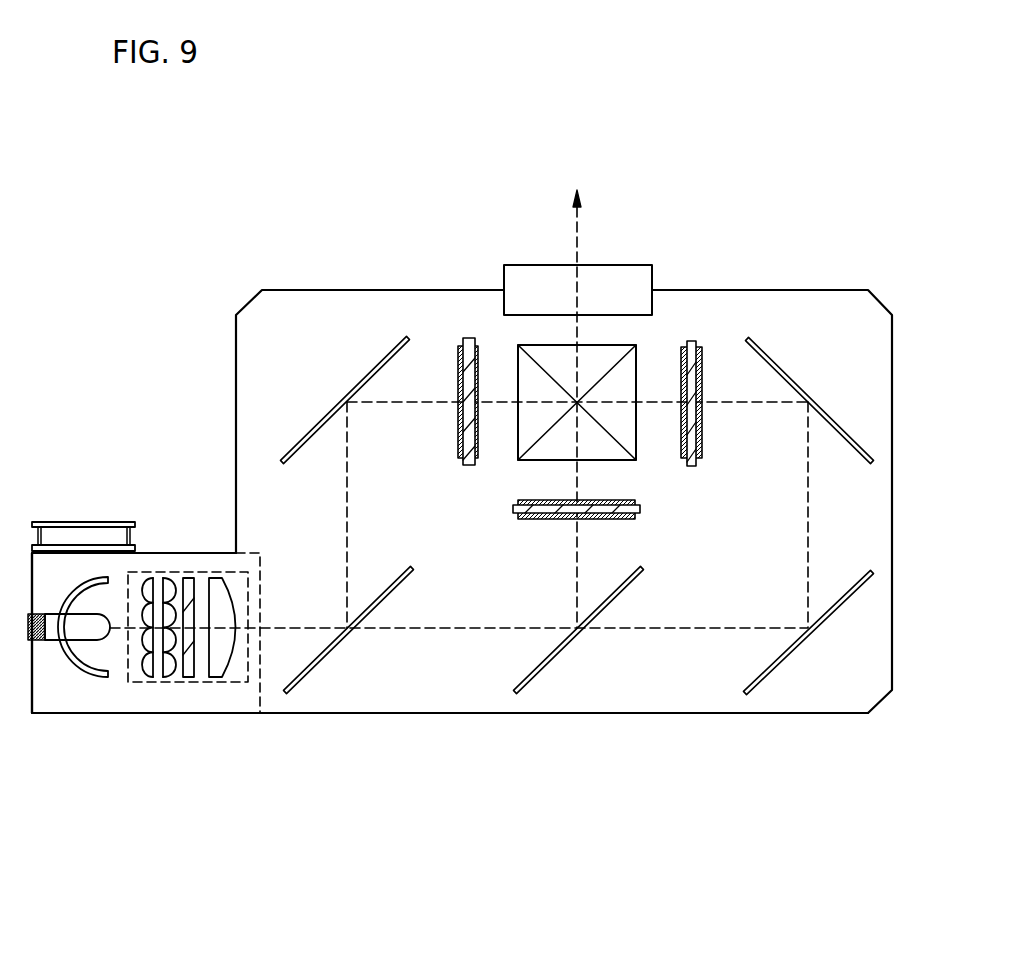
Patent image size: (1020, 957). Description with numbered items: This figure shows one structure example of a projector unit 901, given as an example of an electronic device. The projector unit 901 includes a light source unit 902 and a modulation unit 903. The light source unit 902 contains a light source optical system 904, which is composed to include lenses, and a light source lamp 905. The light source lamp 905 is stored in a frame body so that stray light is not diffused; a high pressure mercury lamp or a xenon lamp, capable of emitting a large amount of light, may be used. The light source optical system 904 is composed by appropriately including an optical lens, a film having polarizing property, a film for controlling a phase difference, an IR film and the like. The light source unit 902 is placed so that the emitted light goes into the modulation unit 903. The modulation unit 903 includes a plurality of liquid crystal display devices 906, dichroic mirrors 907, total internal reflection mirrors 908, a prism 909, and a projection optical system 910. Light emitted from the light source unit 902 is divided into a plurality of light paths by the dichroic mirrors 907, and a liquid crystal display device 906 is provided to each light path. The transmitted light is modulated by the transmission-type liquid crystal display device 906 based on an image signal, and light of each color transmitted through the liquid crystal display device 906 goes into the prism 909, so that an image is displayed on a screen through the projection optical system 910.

The projector unit 901 is at (214, 354).
The light source unit 902 is at (118, 697).
The modulation unit 903 is at (450, 713).
The light source optical system 904 is at (218, 677).
The light source lamp 905 is at (83, 627).
The liquid crystal display device 906 is at (468, 342).
The dichroic mirror 907 is at (312, 670).
The total internal reflection mirror 908 is at (353, 382).
The prism 909 is at (605, 360).
The projection optical system 910 is at (582, 278).